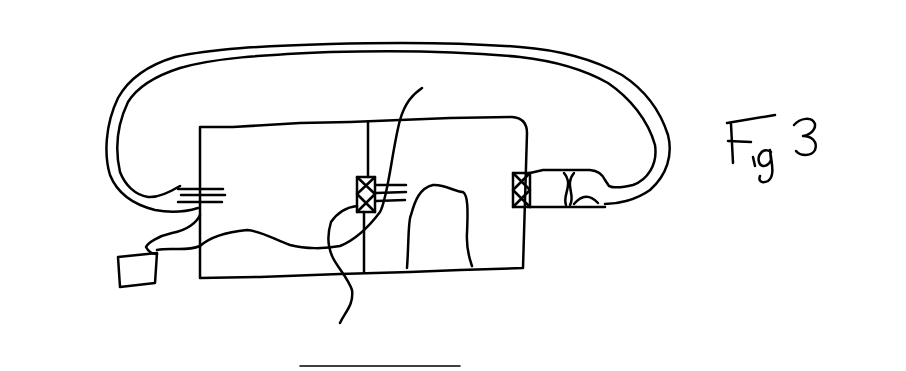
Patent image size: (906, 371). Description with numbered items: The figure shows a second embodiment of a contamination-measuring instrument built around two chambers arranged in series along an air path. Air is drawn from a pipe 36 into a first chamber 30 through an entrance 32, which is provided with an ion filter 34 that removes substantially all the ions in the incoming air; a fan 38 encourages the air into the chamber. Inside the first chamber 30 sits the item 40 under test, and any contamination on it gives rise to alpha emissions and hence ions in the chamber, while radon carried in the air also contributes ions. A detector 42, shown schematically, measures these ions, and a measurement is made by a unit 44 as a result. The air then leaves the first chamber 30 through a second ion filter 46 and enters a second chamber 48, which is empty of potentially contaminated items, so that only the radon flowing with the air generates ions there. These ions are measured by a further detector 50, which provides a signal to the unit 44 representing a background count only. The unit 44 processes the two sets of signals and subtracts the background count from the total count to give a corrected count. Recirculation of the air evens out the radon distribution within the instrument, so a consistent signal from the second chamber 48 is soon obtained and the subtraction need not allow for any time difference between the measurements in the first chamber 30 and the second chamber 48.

The first chamber 30 is at (498, 252).
The entrance 32 is at (551, 216).
The ion filter 34 is at (523, 210).
The pipe 36 is at (607, 73).
The fan 38 is at (598, 203).
The item 40 is at (433, 257).
The detector 42 is at (411, 142).
The unit 44 is at (143, 272).
The ion filter 46 is at (348, 282).
The second chamber 48 is at (272, 270).
The detector 50 is at (200, 183).